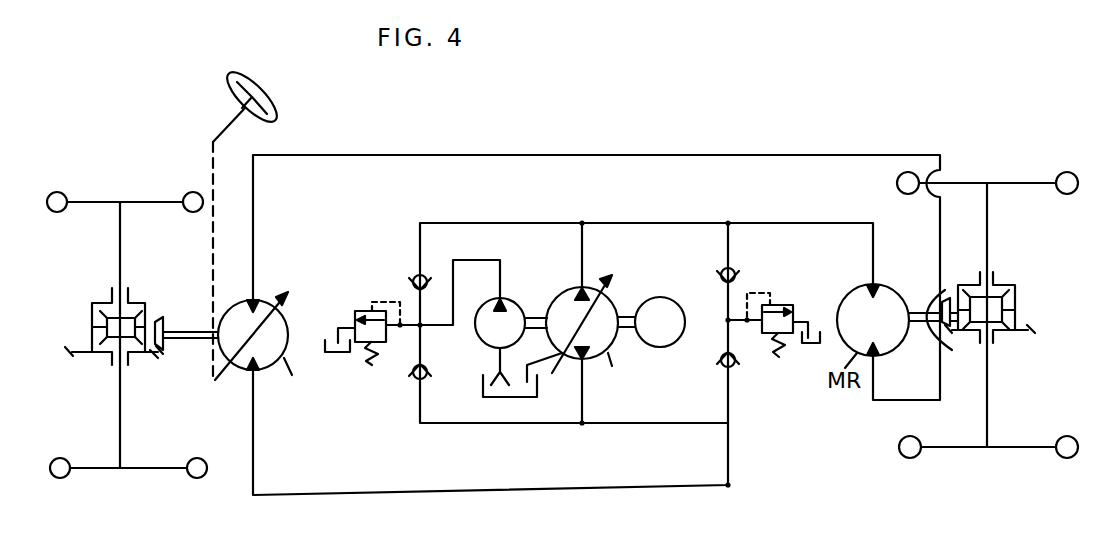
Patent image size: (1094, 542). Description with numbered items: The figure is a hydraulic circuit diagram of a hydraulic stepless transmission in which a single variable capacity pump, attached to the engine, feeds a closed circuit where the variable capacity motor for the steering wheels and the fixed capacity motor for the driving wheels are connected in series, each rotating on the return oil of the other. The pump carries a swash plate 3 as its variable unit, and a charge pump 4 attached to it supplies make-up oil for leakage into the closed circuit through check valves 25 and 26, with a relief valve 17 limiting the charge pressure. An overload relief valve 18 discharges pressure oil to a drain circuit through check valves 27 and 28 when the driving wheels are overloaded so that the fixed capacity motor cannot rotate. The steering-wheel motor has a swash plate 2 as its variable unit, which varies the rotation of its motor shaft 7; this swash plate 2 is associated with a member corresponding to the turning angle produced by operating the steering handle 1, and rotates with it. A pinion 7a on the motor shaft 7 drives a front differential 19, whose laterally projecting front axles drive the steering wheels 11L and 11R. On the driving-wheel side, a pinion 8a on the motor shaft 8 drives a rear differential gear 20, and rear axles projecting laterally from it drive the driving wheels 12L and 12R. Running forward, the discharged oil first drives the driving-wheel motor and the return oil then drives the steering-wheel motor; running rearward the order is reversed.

The steering handle 1 is at (278, 108).
The swash plate 2 is at (288, 300).
The swash plate 3 is at (609, 279).
The charge pump 4 is at (511, 303).
The motor shaft 7 is at (196, 343).
The pinion 7a is at (161, 318).
The motor shaft 8 is at (939, 334).
The pinion 8a is at (946, 298).
The steering wheel 11R is at (103, 200).
The steering wheel 11L is at (95, 470).
The driving wheel 12R is at (972, 182).
The driving wheel 12L is at (968, 452).
The relief valve 17 is at (358, 310).
The overload relief valve 18 is at (793, 304).
The front differential 19 is at (92, 305).
The rear differential gear 20 is at (1026, 293).
The check valve 25 is at (413, 277).
The check valve 26 is at (412, 382).
The check valve 27 is at (736, 273).
The check valve 28 is at (737, 367).